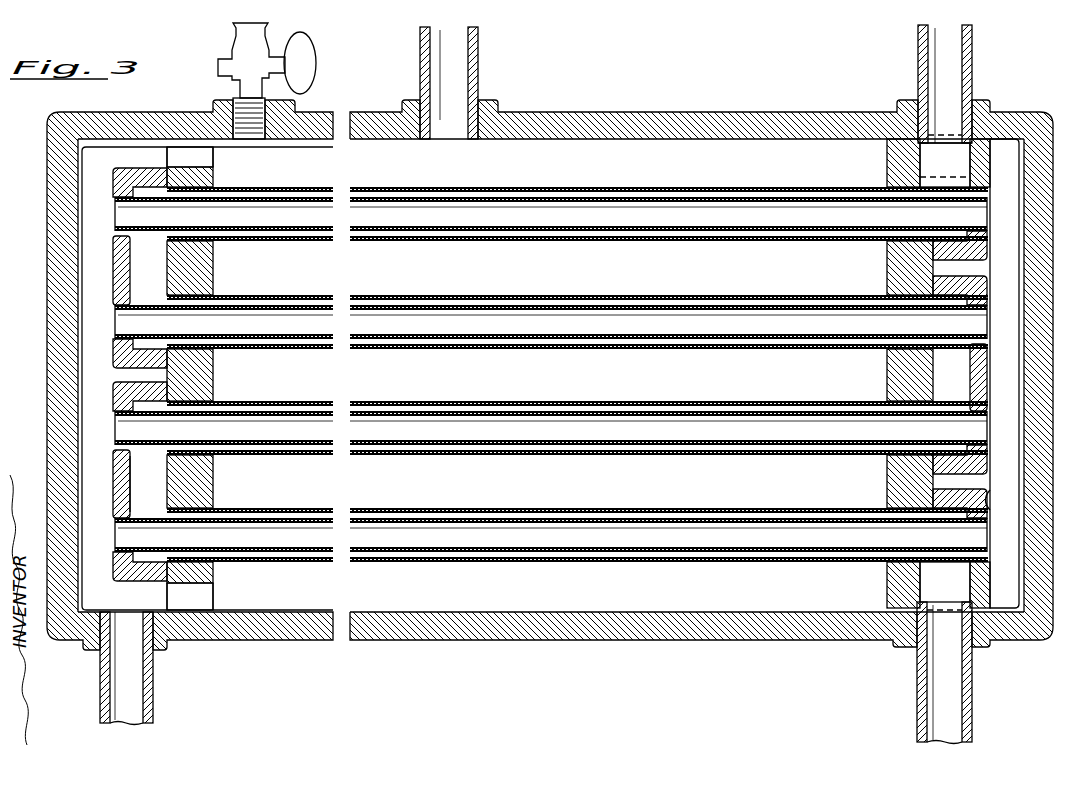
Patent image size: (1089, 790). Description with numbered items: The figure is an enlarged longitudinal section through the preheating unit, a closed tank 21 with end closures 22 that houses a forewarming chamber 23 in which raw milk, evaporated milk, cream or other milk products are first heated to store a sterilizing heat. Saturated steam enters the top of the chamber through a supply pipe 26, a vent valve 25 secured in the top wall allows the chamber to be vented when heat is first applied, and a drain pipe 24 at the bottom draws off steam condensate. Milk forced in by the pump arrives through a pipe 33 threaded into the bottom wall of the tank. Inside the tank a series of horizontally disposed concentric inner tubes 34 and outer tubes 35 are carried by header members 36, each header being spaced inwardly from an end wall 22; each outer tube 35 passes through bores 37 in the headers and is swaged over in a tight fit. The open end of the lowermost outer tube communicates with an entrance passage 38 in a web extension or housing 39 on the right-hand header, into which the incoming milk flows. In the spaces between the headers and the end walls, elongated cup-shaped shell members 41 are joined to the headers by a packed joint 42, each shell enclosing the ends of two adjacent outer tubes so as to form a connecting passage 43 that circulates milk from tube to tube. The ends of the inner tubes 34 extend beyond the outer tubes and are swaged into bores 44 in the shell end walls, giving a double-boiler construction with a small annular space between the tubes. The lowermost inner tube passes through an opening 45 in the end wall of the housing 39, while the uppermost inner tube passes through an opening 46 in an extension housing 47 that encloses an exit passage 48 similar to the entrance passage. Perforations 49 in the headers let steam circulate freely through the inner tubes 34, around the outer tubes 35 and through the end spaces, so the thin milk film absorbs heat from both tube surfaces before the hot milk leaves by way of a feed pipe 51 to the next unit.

The closed tank 21 is at (664, 118).
The end closures 22 is at (57, 312).
The forewarming chamber 23 is at (512, 602).
The drain pipe 24 is at (155, 690).
The vent valve 25 is at (255, 52).
The supply pipe 26 is at (468, 72).
The pipe 33 is at (917, 690).
The inner tubes 34 is at (502, 198).
The outer tubes 35 is at (590, 192).
The header members 36 is at (208, 481).
The bores 37 is at (198, 188).
The passage 38 is at (968, 502).
The web extension or housing 39 is at (984, 593).
The cup shaped shell members 41 is at (118, 263).
The packed joint 42 is at (167, 388).
The connecting passage 43 is at (145, 494).
The bores 44 is at (127, 191).
The opening 45 is at (984, 507).
The opening 46 is at (982, 188).
The extension housing 47 is at (985, 241).
The exit passage 48 is at (919, 158).
The perforations 49 is at (210, 158).
The feed pipe 51 is at (972, 62).